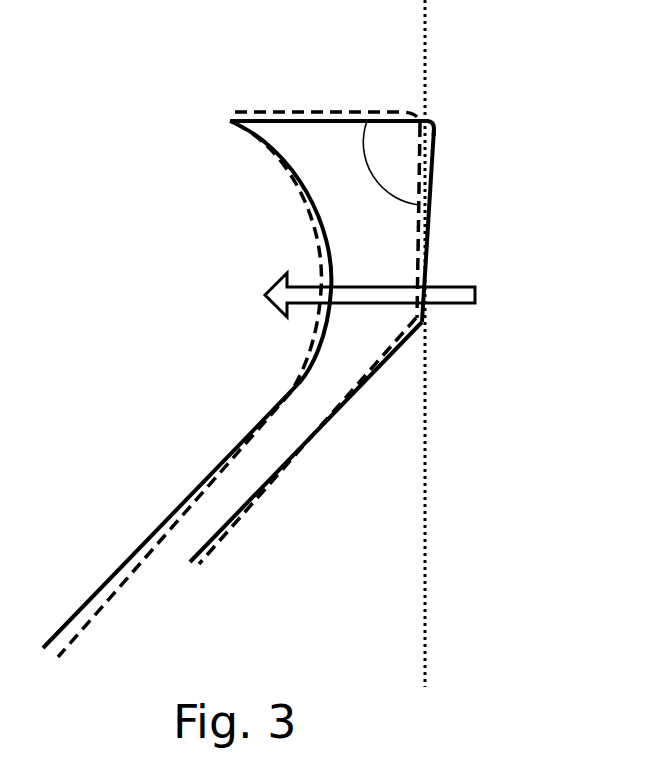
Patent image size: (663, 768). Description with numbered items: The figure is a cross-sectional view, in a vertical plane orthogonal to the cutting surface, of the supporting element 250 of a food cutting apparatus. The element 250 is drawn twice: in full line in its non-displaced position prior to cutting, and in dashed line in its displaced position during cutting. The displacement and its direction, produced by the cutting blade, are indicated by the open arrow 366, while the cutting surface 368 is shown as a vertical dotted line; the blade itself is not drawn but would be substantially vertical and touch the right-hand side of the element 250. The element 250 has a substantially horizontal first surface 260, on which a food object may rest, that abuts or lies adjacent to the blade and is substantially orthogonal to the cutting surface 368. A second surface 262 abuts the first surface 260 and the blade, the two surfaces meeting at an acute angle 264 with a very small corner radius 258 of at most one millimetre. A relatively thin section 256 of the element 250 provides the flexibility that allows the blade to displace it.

The element 250 is at (382, 332).
The relatively thin section 256 is at (284, 516).
The corner radius 258 is at (528, 87).
The first surface 260 is at (387, 125).
The second surface 262 is at (437, 175).
The angle 264 is at (377, 180).
The open arrow 366 is at (458, 295).
The cutting surface 368 is at (427, 473).